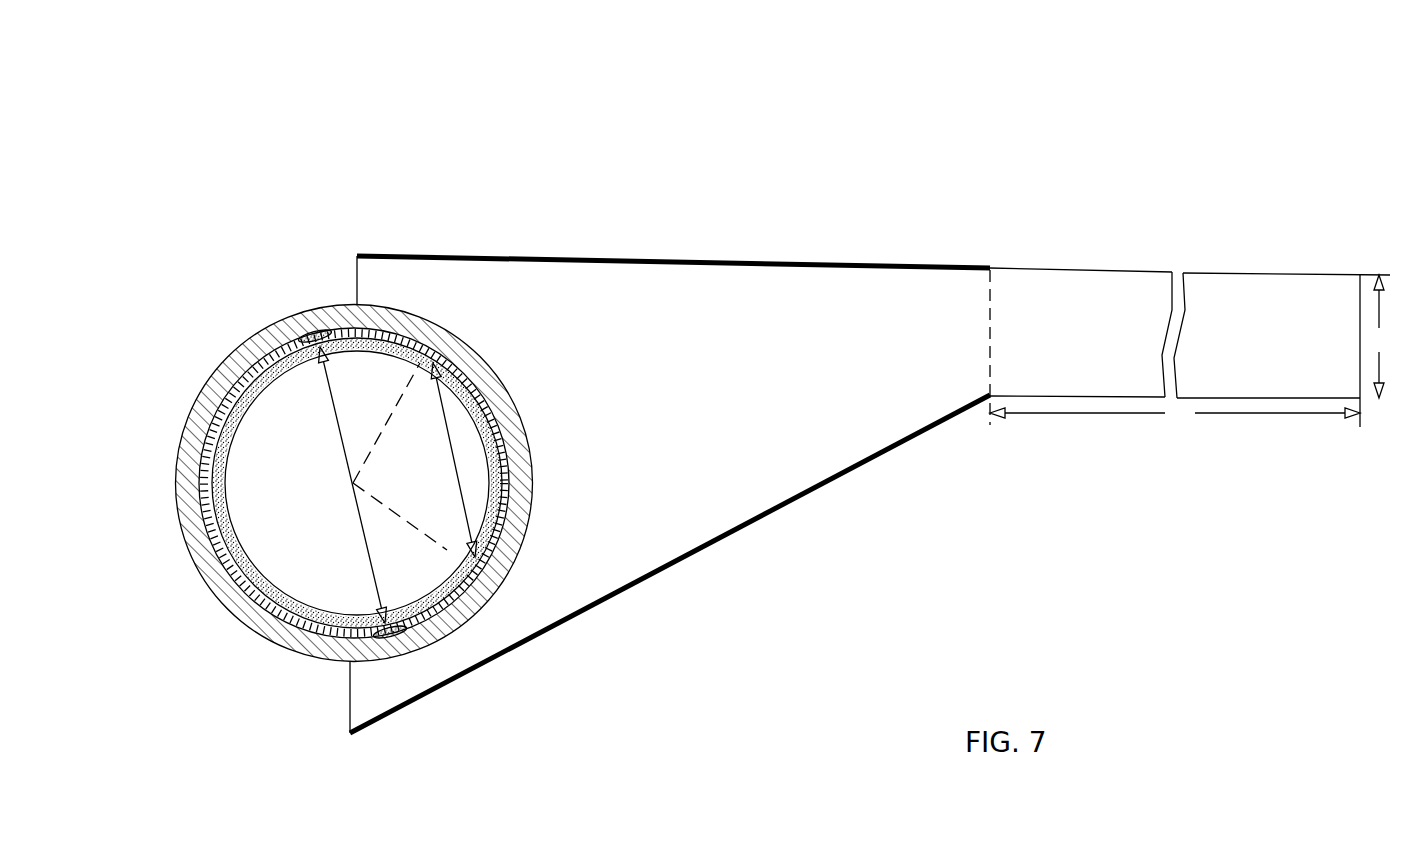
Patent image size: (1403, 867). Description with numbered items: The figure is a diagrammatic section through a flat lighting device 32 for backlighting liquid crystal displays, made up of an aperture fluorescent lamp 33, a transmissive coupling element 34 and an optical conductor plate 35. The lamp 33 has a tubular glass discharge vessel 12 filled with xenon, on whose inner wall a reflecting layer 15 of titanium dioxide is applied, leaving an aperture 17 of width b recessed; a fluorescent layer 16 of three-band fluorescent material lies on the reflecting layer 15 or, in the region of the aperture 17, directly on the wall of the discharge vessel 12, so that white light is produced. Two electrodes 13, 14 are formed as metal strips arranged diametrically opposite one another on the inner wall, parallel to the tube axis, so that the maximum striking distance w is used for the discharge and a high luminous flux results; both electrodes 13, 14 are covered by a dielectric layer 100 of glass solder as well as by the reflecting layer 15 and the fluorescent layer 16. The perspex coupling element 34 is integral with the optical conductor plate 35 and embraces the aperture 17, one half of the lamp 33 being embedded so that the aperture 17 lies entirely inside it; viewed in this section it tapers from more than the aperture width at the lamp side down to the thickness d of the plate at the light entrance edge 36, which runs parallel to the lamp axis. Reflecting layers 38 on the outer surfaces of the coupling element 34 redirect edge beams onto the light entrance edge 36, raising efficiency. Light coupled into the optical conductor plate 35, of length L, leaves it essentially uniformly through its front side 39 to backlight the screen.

The tubular discharge vessel 12 is at (235, 620).
The electrode 13 is at (322, 340).
The electrode 14 is at (393, 640).
The reflecting layer 15 is at (287, 618).
The fluorescent layer 16 is at (240, 378).
The aperture 17 is at (382, 496).
The dielectric layer 100 is at (305, 335).
The flat lighting device 32 is at (1053, 125).
The aperture fluorescent lamp 33 is at (153, 474).
The coupling element 34 is at (738, 202).
The optical conductor plate 35 is at (1294, 211).
The light entrance edge 36 is at (951, 285).
The reflecting layer 38 is at (527, 258).
The front side 39 is at (1105, 272).